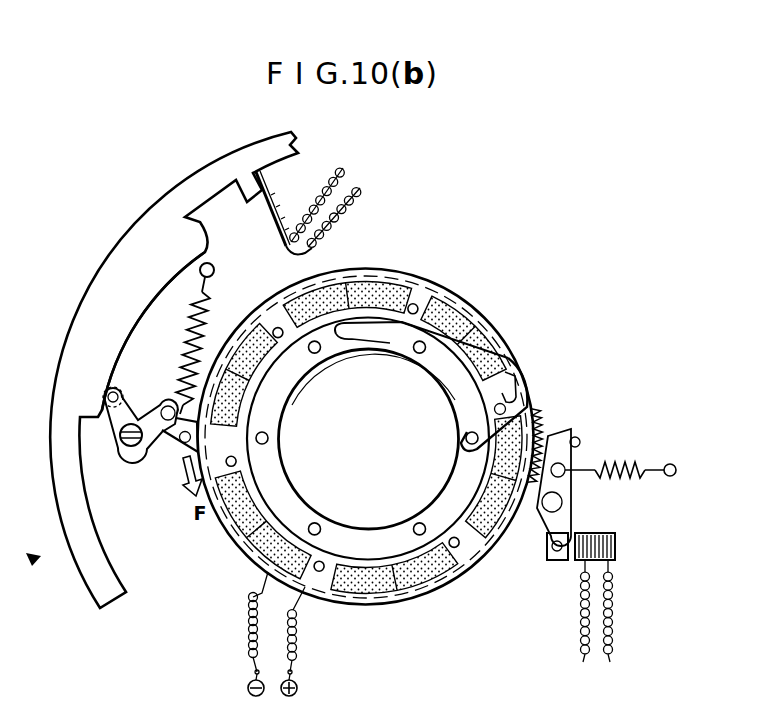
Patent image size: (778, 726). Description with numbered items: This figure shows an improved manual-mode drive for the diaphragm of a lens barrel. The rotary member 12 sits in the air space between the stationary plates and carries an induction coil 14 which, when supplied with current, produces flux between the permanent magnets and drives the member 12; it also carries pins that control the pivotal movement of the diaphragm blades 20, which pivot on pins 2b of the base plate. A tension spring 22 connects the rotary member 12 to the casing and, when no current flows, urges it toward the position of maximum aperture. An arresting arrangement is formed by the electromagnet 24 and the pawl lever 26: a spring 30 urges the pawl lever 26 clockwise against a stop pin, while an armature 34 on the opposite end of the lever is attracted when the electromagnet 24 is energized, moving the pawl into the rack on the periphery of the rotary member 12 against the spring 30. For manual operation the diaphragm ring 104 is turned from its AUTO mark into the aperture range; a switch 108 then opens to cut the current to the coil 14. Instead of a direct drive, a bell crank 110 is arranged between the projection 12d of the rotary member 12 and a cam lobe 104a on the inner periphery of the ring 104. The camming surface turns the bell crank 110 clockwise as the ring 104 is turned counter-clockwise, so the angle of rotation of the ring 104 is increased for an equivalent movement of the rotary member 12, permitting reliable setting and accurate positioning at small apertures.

The diaphragm ring 104 is at (108, 265).
The cam lobe 104a is at (152, 313).
The tension spring 22 is at (207, 318).
The switch 108 is at (282, 204).
The diaphragm blade 20 is at (370, 340).
The pin 2b is at (419, 354).
The pawl lever 26 is at (557, 430).
The spring 30 is at (636, 466).
The electromagnet 24 is at (603, 535).
The armature 34 is at (557, 562).
The rotary member 12 is at (473, 567).
The induction coil 14 is at (361, 602).
The bell crank 110 is at (117, 430).
The projection 12d is at (170, 445).